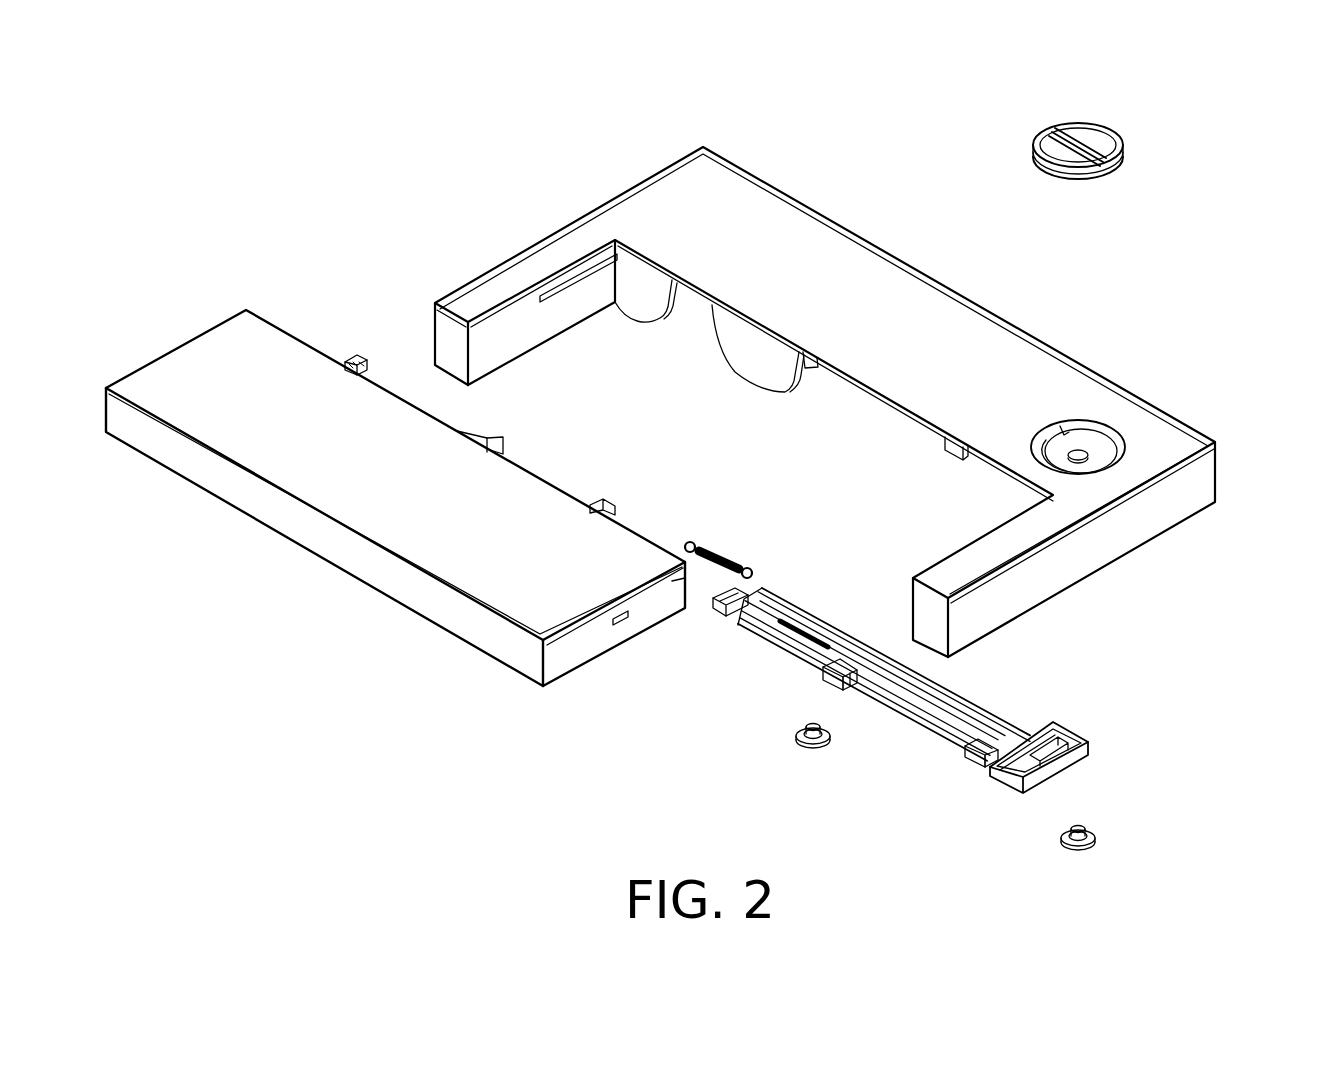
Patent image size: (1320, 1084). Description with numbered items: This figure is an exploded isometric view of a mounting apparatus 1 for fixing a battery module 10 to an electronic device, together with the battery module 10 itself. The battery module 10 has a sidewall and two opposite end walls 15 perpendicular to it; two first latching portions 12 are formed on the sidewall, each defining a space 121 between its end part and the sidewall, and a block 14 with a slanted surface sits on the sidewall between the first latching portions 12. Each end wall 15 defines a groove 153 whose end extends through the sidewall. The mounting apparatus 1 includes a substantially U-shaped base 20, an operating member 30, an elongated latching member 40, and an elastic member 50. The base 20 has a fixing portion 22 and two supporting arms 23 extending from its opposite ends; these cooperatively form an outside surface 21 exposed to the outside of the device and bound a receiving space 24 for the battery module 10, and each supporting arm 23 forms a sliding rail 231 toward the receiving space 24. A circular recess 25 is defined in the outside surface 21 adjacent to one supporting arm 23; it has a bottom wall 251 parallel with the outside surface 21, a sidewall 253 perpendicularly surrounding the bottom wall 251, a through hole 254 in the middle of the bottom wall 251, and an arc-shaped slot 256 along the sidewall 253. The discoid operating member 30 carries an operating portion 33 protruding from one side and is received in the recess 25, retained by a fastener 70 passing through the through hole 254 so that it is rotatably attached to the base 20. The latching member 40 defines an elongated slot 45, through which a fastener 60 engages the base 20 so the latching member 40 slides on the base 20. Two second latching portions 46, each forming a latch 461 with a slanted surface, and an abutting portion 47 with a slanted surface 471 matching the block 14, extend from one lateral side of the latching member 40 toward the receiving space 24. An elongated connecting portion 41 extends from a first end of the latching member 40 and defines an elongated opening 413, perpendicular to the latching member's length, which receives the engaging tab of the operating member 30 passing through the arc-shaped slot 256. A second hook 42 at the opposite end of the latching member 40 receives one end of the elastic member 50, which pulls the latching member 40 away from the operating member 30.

The mounting apparatus 1 is at (1170, 733).
The battery module 10 is at (395, 491).
The first latching portion 12 is at (343, 350).
The space 121 is at (352, 358).
The block 14 is at (490, 440).
The end wall 15 is at (577, 655).
The groove 153 is at (626, 622).
The base 20 is at (862, 393).
The outside surface 21 is at (838, 272).
The fixing portion 22 is at (880, 400).
The supporting arm 23 is at (549, 323).
The sliding rail 231 is at (593, 300).
The receiving space 24 is at (1010, 549).
The circular recess 25 is at (1160, 432).
The bottom wall 251 is at (1112, 458).
The sidewall 253 is at (1097, 425).
The through hole 254 is at (1080, 462).
The arc-shaped slot 256 is at (1047, 415).
The operating member 30 is at (1116, 131).
The operating portion 33 is at (1083, 140).
The latching member 40 is at (921, 679).
The connecting portion 41 is at (1060, 738).
The opening 413 is at (1028, 752).
The second hook 42 is at (747, 590).
The slot 45 is at (790, 627).
The second latching portion 46 is at (970, 765).
The latch 461 is at (968, 760).
The abutting portion 47 is at (820, 670).
The slanted surface 471 is at (843, 690).
The elastic member 50 is at (712, 545).
The fastener 60 is at (798, 738).
The fastener 70 is at (1098, 845).